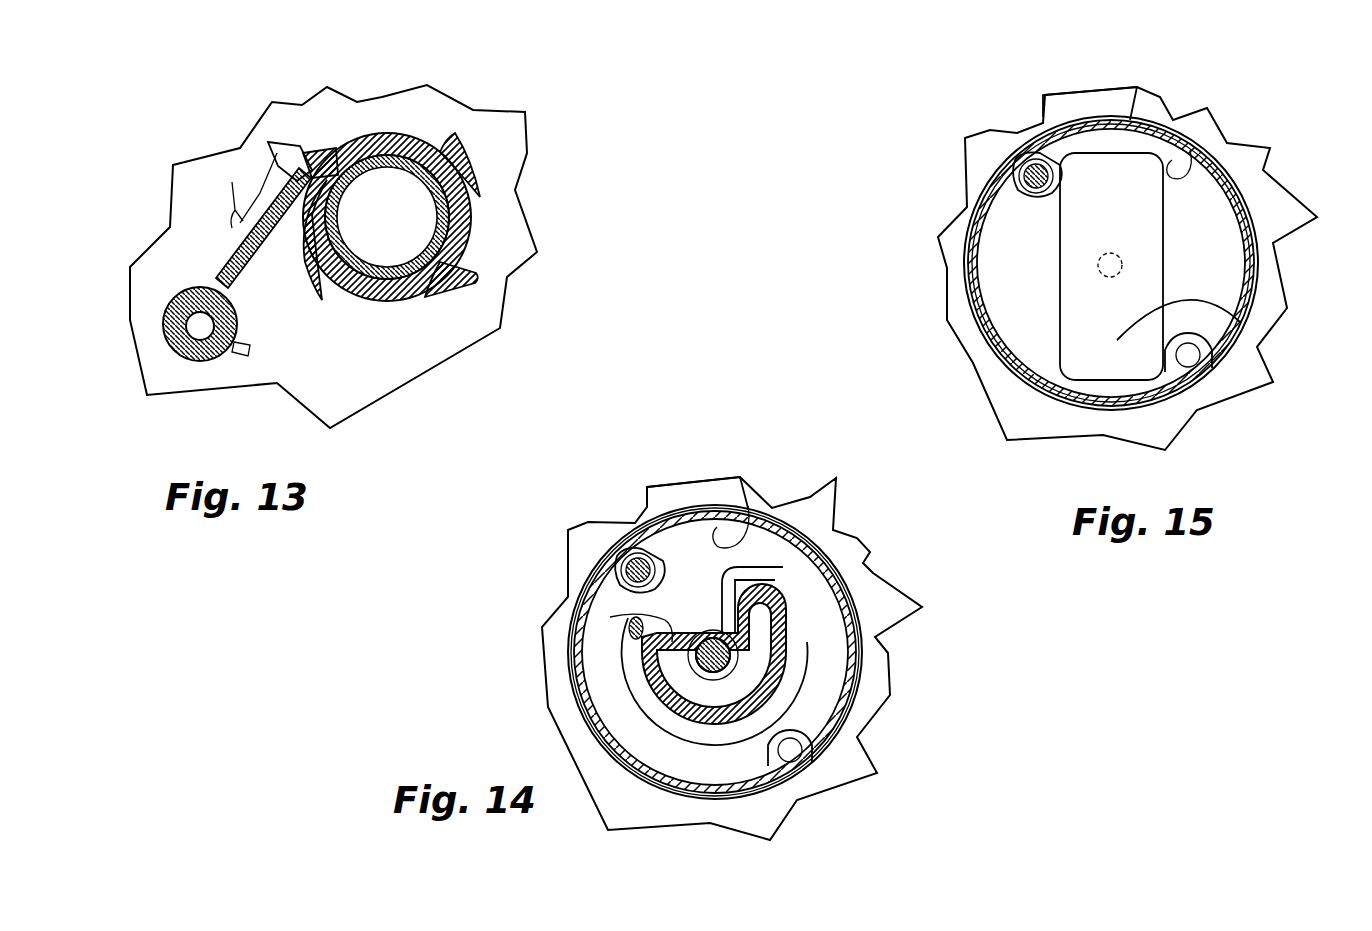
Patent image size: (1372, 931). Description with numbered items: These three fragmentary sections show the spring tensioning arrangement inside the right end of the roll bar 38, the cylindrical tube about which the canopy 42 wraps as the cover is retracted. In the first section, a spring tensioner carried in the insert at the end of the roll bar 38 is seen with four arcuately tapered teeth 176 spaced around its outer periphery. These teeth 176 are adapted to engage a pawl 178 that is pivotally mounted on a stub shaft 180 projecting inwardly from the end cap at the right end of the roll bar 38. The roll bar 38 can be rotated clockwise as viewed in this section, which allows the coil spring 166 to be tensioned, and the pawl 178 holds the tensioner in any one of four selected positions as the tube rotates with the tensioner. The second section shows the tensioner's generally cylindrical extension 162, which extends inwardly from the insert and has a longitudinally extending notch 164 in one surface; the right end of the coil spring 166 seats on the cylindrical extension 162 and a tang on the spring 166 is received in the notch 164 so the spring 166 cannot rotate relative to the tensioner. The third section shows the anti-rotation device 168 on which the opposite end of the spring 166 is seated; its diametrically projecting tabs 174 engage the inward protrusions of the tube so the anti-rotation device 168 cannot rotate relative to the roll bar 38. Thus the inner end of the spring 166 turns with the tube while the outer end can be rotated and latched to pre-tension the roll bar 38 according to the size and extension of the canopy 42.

In FIG. 14, the roll bar 38 is at (745, 492).
In FIG. 15, the roll bar 38 is at (1187, 173).
In FIG. 14, the canopy 42 is at (667, 485).
In FIG. 15, the canopy 42 is at (1057, 117).
In FIG. 14, the cylindrical extension 162 is at (797, 633).
In FIG. 14, the notch 164 is at (591, 596).
In FIG. 14, the coil spring 166 is at (772, 595).
In FIG. 15, the anti-rotation device 168 is at (1046, 281).
In FIG. 15, the tabs 174 is at (1117, 193).
In FIG. 13, the arcuately tapered teeth 176 is at (330, 145).
In FIG. 13, the pawl 178 is at (250, 235).
In FIG. 13, the stub shaft 180 is at (197, 332).